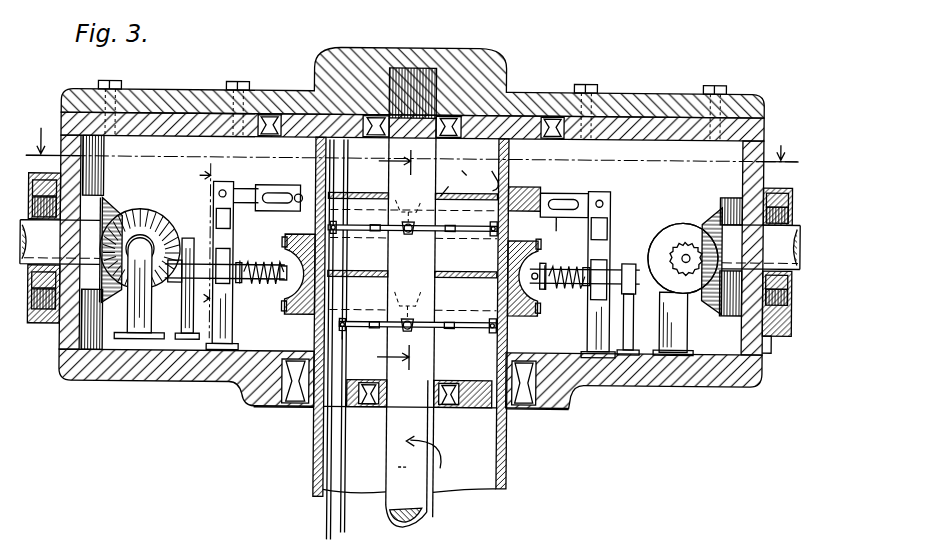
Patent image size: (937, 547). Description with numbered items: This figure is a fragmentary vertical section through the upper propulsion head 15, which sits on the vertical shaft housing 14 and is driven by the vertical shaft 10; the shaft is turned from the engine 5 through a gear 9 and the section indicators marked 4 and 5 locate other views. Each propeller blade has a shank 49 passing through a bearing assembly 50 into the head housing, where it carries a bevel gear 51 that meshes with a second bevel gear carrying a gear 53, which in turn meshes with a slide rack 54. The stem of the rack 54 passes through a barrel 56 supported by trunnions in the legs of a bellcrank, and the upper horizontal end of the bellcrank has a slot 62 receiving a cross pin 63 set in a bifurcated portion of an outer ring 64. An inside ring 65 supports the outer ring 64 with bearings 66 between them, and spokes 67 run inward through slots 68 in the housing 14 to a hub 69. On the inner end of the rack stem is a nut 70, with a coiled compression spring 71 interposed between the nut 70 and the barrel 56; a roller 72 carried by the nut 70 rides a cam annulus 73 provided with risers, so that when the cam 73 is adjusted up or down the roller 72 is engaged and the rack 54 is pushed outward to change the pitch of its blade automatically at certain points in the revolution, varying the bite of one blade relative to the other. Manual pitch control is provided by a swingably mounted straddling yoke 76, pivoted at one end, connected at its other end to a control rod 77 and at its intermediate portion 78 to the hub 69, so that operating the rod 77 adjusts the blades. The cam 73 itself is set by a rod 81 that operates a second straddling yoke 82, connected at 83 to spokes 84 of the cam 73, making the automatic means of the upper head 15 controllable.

The section line 4- 4 is at (412, 137).
The power plant 5 is at (383, 260).
The gear 9 is at (197, 250).
The vertical shaft 10 is at (436, 462).
The vertical shaft housing 14 is at (510, 466).
The upper propulsion head 15 is at (692, 398).
The shank 49 is at (748, 240).
The bearing assembly 50 is at (770, 350).
The bevel gear 51 is at (710, 212).
The gear 53 is at (672, 240).
The slide rack 54 is at (655, 290).
The barrel 56 is at (578, 300).
The slot 62 is at (572, 193).
The cross pin 63 is at (556, 216).
The ring 64 is at (568, 192).
The inside ring 65 is at (520, 186).
The ball bearings 66 is at (302, 188).
The spokes 67 is at (456, 183).
The slots 68 is at (486, 172).
The hub 69 is at (454, 163).
The nut 70 is at (553, 268).
The coiled compression spring 71 is at (579, 266).
The roller 72 is at (546, 288).
The cam annulus 73 is at (300, 314).
The straddling yoke 76 is at (466, 238).
The control rod 77 is at (330, 312).
The connection 78 is at (408, 234).
The rod 81 is at (348, 527).
The second straddling yoke 82 is at (462, 331).
The connection 83 is at (416, 319).
The spokes 84 is at (365, 238).